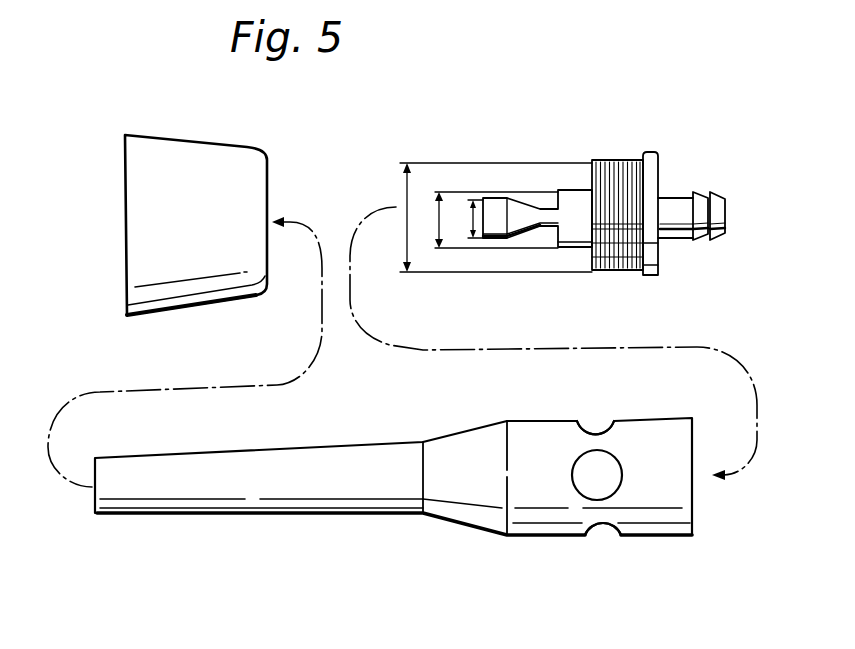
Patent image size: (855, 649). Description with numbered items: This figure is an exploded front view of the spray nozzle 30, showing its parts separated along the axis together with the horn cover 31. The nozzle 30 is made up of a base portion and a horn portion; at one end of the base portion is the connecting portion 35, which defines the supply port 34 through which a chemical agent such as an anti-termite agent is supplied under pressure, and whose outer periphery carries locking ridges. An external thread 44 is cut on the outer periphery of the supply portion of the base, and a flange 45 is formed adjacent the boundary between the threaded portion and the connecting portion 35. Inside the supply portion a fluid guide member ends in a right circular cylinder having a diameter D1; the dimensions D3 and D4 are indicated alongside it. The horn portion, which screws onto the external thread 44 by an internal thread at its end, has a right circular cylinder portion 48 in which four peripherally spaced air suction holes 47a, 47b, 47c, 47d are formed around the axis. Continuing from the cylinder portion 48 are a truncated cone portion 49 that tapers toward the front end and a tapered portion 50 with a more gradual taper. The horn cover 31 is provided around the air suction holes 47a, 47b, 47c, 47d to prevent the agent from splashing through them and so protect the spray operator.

The spray nozzle 30 is at (432, 494).
The horn cover 31 is at (188, 165).
The supply port 34 is at (713, 203).
The connecting portion 35 is at (675, 207).
The external thread 44 is at (611, 270).
The flange 45 is at (662, 264).
The air suction hole 47a is at (593, 428).
The air suction hole 47b is at (671, 524).
The air suction hole 47c is at (603, 527).
The air suction hole 47d is at (610, 477).
The right circular cylinder portion 48 is at (535, 517).
The truncated cone portion 49 is at (462, 505).
The tapered portion 50 is at (263, 505).
The diameter of right circular cylinder portion D1 is at (473, 218).
The diameter D3 is at (437, 218).
The thread diameter D4 is at (407, 208).